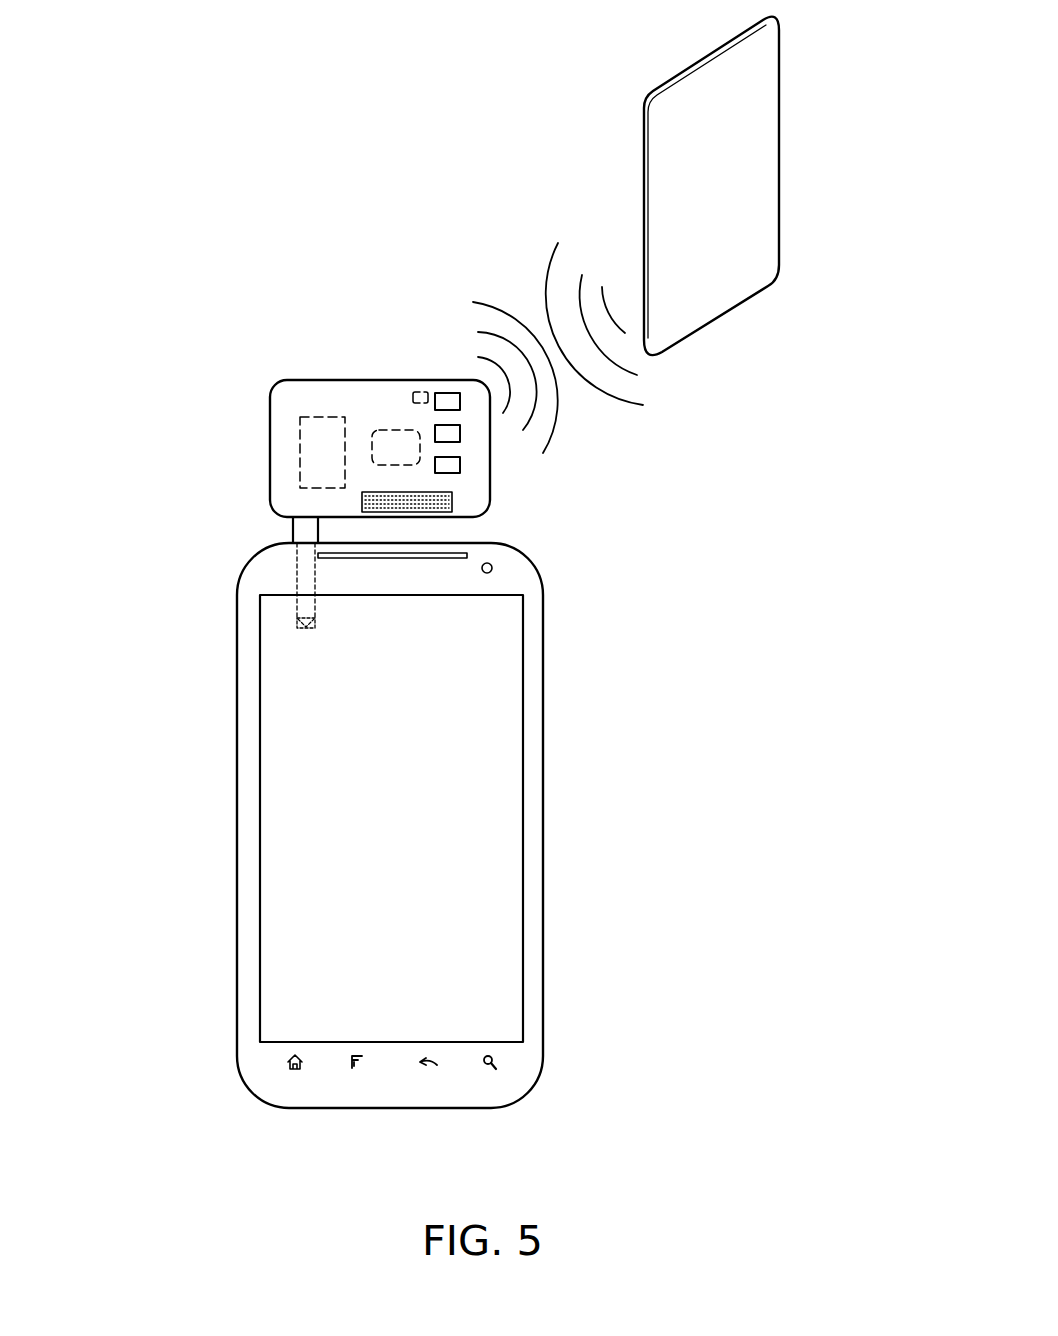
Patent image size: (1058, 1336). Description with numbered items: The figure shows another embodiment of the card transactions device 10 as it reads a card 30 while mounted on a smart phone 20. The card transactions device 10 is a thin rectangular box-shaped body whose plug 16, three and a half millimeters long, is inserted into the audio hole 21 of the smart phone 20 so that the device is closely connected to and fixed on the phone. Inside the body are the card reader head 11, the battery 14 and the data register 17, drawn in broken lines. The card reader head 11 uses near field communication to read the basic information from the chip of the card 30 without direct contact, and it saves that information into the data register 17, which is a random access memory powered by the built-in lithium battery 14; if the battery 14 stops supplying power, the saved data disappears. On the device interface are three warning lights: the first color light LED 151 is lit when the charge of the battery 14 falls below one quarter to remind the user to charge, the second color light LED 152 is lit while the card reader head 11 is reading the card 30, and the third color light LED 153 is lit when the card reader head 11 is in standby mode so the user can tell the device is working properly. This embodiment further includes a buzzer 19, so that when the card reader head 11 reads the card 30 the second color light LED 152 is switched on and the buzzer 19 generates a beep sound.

The card transactions device 10 is at (253, 452).
The card reader head 11 is at (397, 430).
The battery 14 is at (323, 417).
The plug 16 is at (297, 577).
The data register 17 is at (425, 392).
The buzzer 19 is at (380, 502).
The first color light LED 151 is at (452, 402).
The second color light LED 152 is at (452, 434).
The third color light LED 153 is at (452, 466).
The smart phone 20 is at (202, 815).
The audio hole 21 is at (297, 632).
The card 30 is at (780, 137).